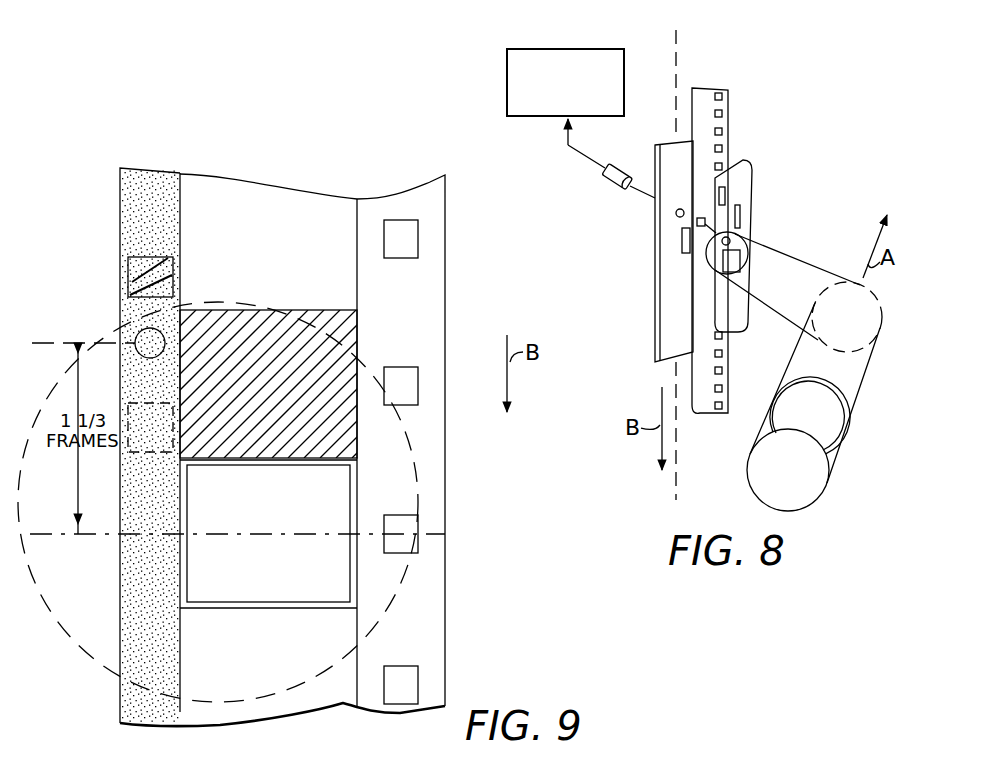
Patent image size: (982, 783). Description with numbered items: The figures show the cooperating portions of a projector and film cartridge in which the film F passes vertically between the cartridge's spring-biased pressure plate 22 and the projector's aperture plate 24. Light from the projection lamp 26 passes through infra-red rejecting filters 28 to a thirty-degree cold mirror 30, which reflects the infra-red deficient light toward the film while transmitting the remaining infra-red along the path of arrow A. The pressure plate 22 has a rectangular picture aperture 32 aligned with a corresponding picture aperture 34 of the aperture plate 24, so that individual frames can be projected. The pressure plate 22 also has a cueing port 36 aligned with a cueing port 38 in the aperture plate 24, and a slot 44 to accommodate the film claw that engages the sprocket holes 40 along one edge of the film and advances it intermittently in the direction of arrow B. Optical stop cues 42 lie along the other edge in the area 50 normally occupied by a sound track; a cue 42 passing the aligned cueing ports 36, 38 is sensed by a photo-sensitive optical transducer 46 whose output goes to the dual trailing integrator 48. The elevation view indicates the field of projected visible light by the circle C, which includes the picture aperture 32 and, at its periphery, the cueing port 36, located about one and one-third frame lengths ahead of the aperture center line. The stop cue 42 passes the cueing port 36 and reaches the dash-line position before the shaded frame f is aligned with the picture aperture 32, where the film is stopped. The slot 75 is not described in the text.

In FIG. 8, the pressure plate 22 is at (752, 168).
In FIG. 8, the aperture plate 24 is at (657, 336).
In FIG. 8, the projection lamp 26 is at (757, 463).
In FIG. 8, the infra-red rejecting filters 28 is at (840, 428).
In FIG. 8, the cold mirror 30 is at (876, 318).
In FIG. 9, the picture aperture 32 is at (330, 580).
In FIG. 8, the picture aperture 32 is at (741, 268).
In FIG. 8, the picture aperture 34 is at (682, 246).
In FIG. 9, the cueing port 36 is at (140, 347).
In FIG. 8, the cueing port 36 is at (730, 241).
In FIG. 8, the cueing port 38 is at (676, 215).
In FIG. 9, the sprocket holes 40 is at (418, 240).
In FIG. 8, the sprocket holes 40 is at (723, 97).
In FIG. 9, the optical stop cues 42 is at (166, 277).
In FIG. 8, the optical stop cues 42 is at (701, 218).
In FIG. 8, the slot 44 is at (741, 214).
In FIG. 8, the photo-sensitive optical transducer 46 is at (605, 180).
In FIG. 8, the dual trailing integrator 48 is at (507, 100).
In FIG. 9, the area 50 is at (163, 222).
In FIG. 8, the slot 75 is at (723, 190).
In FIG. 9, the film F is at (445, 322).
In FIG. 8, the film F is at (708, 90).
In FIG. 9, the circle C is at (412, 470).
In FIG. 9, the shaded frame f is at (340, 330).